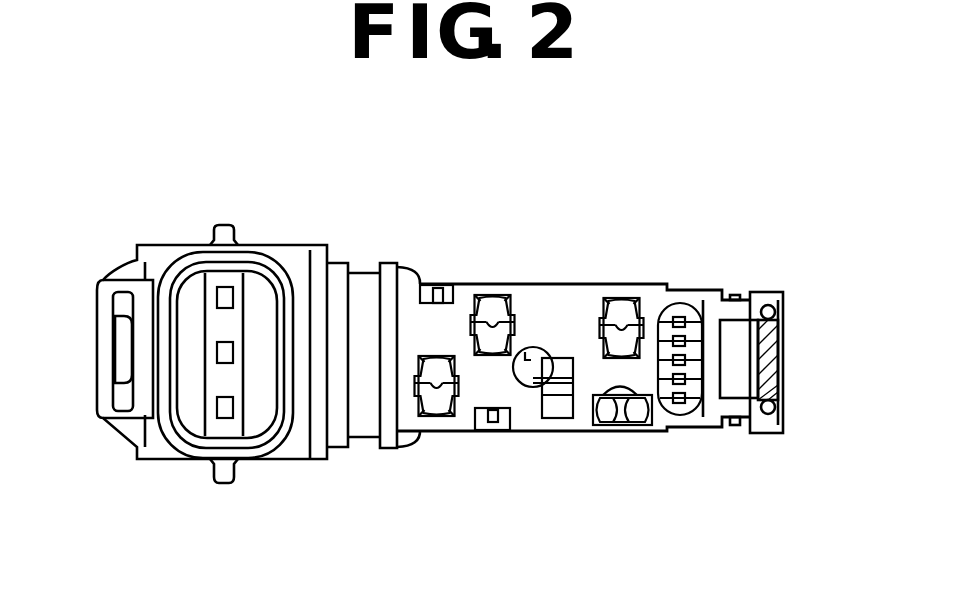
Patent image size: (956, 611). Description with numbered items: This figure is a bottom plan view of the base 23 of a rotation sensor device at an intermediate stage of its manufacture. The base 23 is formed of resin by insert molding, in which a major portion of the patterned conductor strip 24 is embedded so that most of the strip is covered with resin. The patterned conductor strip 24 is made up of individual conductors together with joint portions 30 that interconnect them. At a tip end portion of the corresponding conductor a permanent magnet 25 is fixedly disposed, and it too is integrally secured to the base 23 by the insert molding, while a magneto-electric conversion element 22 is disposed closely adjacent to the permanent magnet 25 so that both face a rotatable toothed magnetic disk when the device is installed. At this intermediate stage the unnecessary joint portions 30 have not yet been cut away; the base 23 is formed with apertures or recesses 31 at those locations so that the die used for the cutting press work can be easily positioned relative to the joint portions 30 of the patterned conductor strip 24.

The magneto-electric conversion element 22 is at (768, 357).
The base 23 is at (562, 308).
The patterned conductor strip 24 is at (233, 407).
The permanent magnet 25 is at (740, 343).
The joint portions 30 is at (523, 388).
The apertures or recesses 31 is at (593, 415).